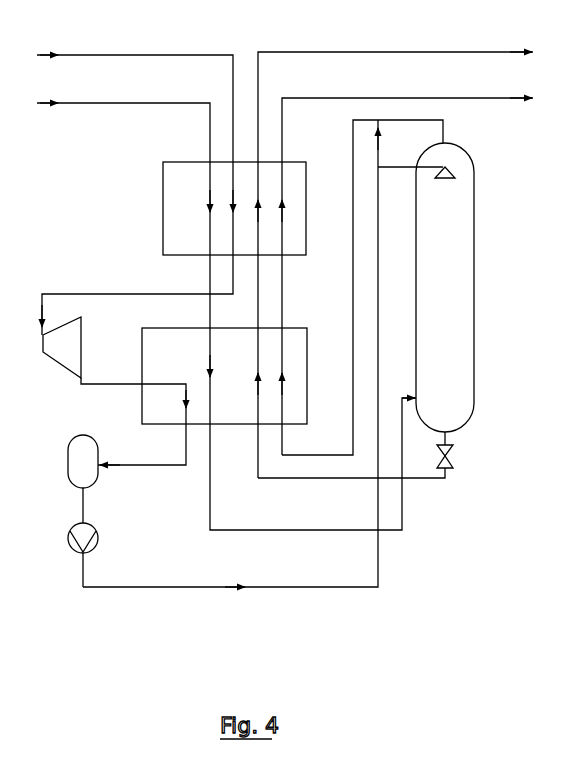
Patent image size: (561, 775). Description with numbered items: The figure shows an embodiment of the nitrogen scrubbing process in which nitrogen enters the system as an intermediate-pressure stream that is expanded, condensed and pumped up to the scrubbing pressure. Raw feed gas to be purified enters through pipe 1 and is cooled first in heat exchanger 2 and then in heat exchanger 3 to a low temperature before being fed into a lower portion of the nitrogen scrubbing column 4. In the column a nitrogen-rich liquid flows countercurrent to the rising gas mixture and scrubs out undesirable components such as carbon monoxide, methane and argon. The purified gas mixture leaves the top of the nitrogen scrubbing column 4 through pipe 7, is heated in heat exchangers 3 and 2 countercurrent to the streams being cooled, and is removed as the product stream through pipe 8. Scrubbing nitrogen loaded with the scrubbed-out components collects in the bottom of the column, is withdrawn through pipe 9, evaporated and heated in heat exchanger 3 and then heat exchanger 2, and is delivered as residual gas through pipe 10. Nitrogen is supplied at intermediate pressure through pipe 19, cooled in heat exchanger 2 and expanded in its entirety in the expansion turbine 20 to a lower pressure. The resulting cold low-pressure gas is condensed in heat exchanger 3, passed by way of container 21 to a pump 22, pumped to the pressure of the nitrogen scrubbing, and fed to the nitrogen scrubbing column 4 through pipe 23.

The pipe 1 is at (95, 102).
The heat exchanger 2 is at (163, 212).
The heat exchanger 3 is at (142, 412).
The nitrogen scrubbing column 4 is at (474, 295).
The pipe 7 is at (447, 124).
The pipe 8 is at (471, 97).
The pipe 9 is at (448, 475).
The pipe 10 is at (478, 51).
The pipe 19 is at (100, 54).
The expansion turbine 20 is at (50, 357).
The container 21 is at (66, 466).
The pump 22 is at (97, 545).
The pipe 23 is at (378, 565).